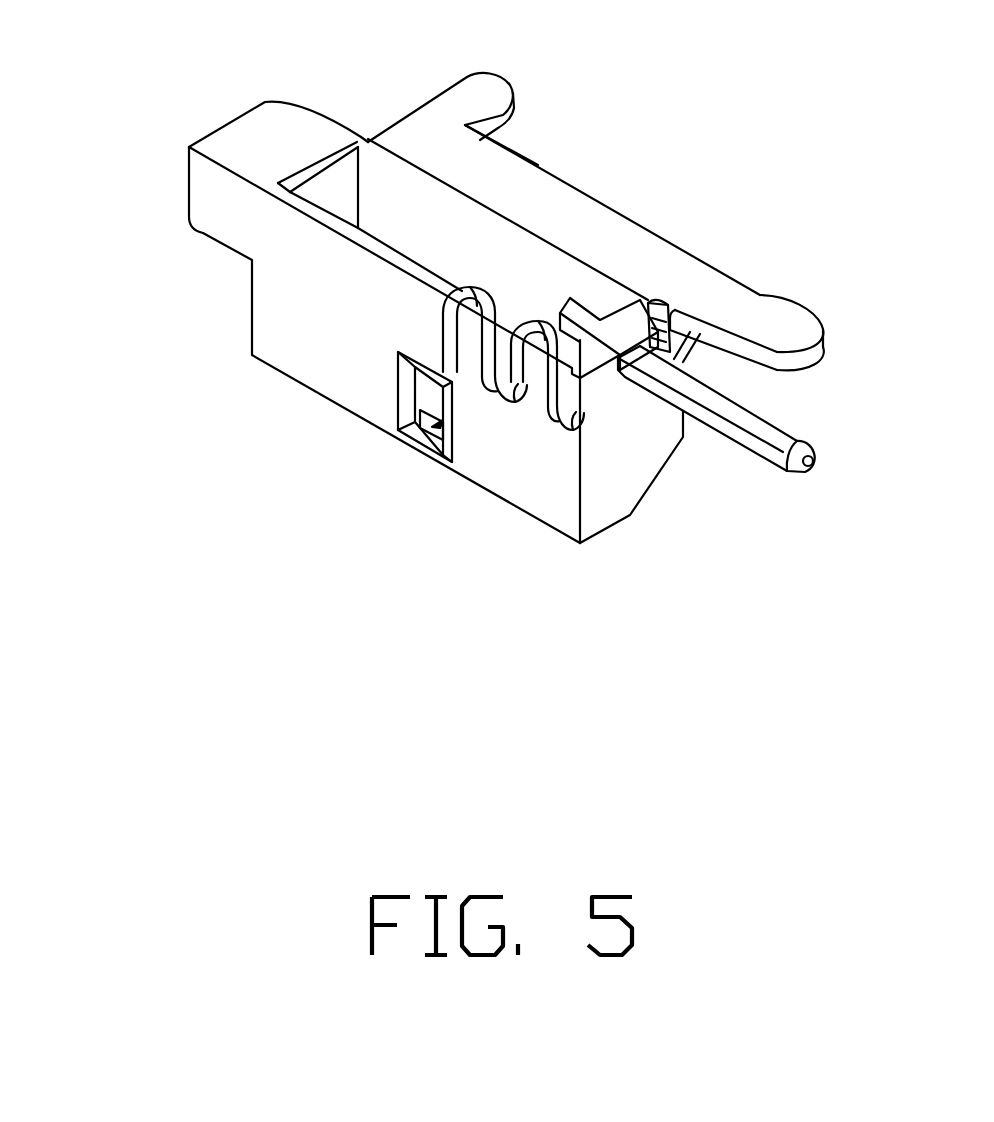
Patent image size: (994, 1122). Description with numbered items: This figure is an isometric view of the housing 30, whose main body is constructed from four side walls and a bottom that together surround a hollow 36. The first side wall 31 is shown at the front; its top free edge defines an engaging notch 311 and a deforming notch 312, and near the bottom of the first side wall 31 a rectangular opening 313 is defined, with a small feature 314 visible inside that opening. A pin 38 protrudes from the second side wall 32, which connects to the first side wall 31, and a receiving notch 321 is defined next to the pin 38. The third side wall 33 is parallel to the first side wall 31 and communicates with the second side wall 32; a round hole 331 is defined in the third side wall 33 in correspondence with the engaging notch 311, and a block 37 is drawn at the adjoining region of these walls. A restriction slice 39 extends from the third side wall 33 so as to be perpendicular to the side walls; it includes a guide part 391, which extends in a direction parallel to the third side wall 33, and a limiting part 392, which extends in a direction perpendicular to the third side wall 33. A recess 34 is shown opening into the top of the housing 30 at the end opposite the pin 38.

The housing 30 is at (154, 320).
The first side wall 31 is at (305, 335).
The second side wall 32 is at (645, 458).
The third side wall 33 is at (513, 253).
The receiving recess 34 is at (337, 182).
The hollow 36 is at (428, 248).
The mounting block 37 is at (600, 308).
The pin 38 is at (750, 440).
The restriction slice 39 is at (483, 147).
The engaging notch 311 is at (490, 390).
The deforming notch 312 is at (549, 415).
The rectangular opening 313 is at (412, 437).
The latch in window 314 is at (443, 420).
The receiving notch 321 is at (688, 362).
The round hole 331 is at (598, 322).
The guide part 391 is at (516, 175).
The limiting part 392 is at (482, 92).